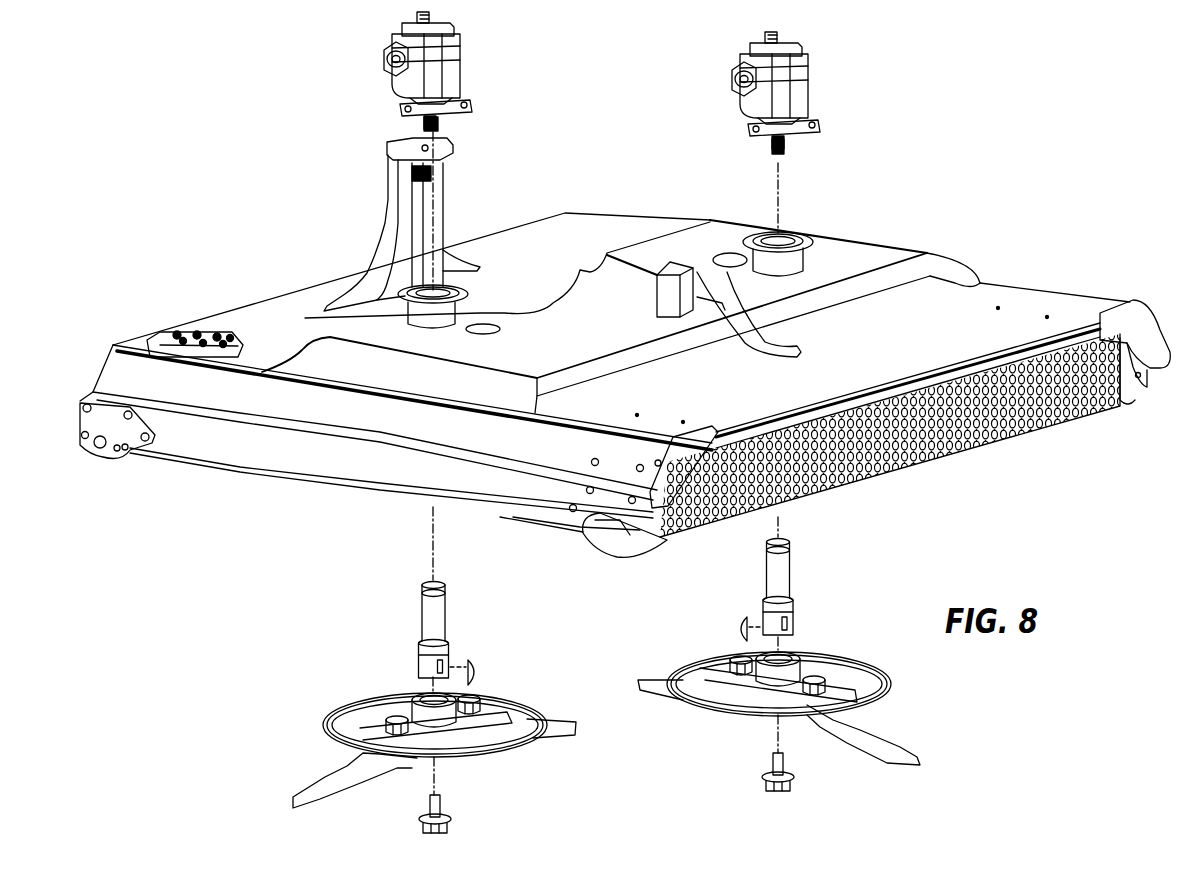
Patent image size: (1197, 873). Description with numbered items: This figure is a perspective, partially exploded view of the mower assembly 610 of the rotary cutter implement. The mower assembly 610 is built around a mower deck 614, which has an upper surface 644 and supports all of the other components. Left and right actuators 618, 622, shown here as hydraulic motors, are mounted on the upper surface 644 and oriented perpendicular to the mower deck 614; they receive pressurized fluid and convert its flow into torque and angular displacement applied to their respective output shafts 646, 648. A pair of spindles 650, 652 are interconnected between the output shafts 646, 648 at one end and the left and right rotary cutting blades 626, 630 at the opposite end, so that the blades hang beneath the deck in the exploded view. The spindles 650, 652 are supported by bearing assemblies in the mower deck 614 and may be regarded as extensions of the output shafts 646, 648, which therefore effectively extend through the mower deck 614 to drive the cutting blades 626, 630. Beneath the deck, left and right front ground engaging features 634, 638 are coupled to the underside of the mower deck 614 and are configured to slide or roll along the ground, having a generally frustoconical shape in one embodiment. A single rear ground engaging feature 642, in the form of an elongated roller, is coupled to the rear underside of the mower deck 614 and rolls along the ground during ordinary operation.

The mower assembly 610 is at (205, 126).
The mower deck 614 is at (1020, 302).
The left actuator 618 is at (803, 92).
The right actuator 622 is at (463, 72).
The left rotary cutting blade 626 is at (878, 745).
The right rotary cutting blade 630 is at (328, 790).
The left front ground engaging feature 634 is at (1130, 407).
The right front ground engaging feature 638 is at (618, 547).
The rear ground engaging feature 642 is at (140, 463).
The upper surface 644 is at (556, 353).
The output shaft 646 is at (784, 150).
The output shaft 648 is at (437, 128).
The spindle 650 is at (787, 580).
The spindle 652 is at (440, 623).